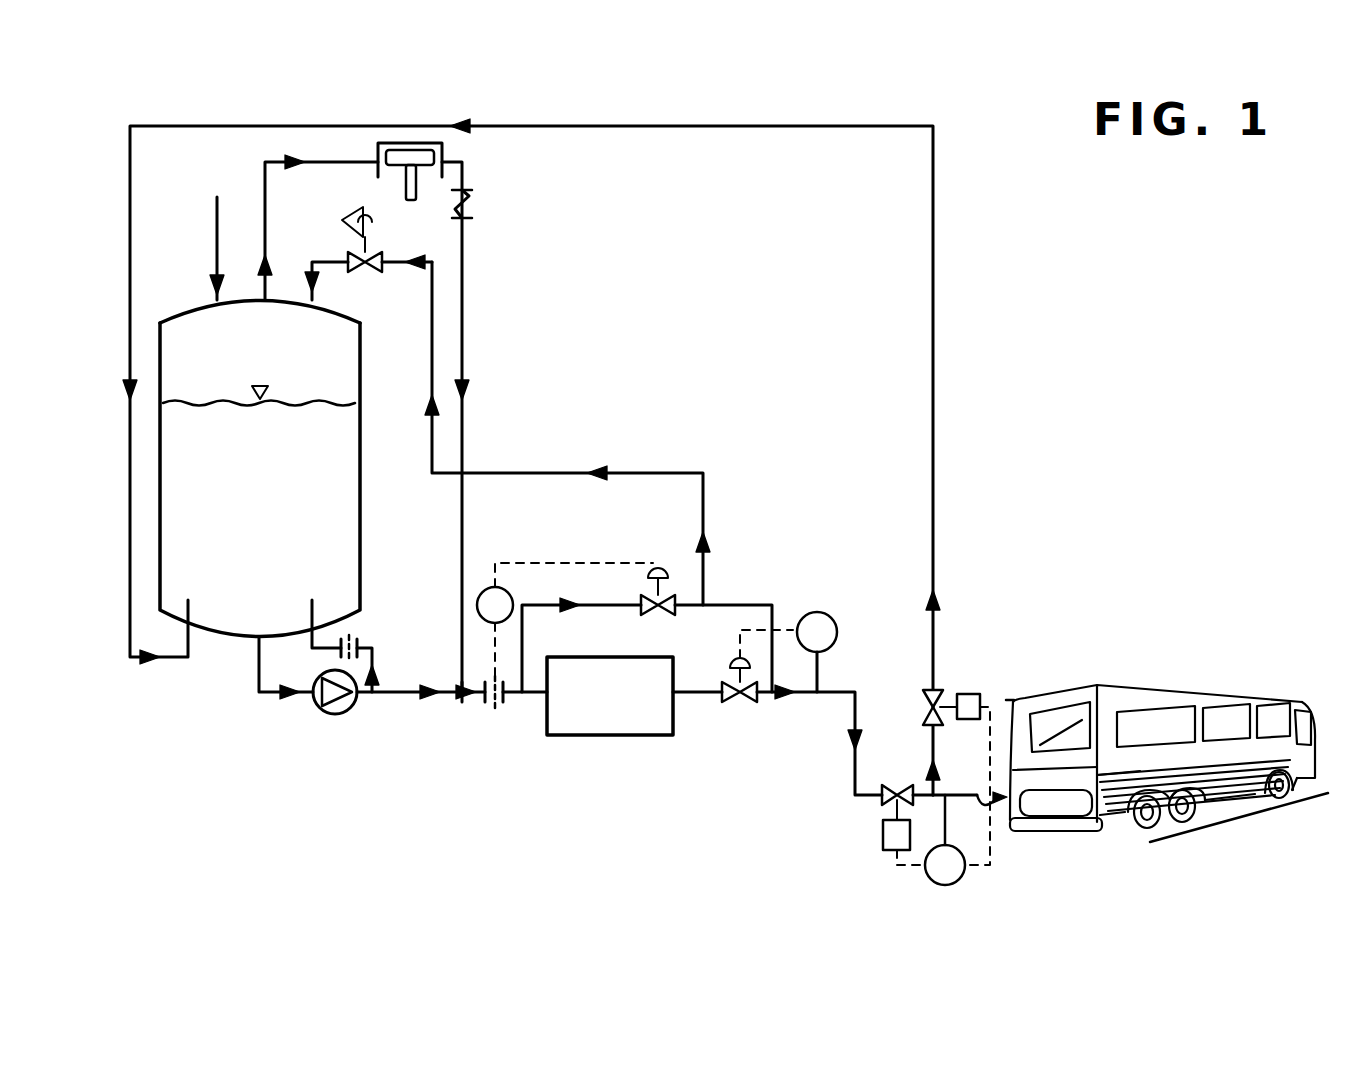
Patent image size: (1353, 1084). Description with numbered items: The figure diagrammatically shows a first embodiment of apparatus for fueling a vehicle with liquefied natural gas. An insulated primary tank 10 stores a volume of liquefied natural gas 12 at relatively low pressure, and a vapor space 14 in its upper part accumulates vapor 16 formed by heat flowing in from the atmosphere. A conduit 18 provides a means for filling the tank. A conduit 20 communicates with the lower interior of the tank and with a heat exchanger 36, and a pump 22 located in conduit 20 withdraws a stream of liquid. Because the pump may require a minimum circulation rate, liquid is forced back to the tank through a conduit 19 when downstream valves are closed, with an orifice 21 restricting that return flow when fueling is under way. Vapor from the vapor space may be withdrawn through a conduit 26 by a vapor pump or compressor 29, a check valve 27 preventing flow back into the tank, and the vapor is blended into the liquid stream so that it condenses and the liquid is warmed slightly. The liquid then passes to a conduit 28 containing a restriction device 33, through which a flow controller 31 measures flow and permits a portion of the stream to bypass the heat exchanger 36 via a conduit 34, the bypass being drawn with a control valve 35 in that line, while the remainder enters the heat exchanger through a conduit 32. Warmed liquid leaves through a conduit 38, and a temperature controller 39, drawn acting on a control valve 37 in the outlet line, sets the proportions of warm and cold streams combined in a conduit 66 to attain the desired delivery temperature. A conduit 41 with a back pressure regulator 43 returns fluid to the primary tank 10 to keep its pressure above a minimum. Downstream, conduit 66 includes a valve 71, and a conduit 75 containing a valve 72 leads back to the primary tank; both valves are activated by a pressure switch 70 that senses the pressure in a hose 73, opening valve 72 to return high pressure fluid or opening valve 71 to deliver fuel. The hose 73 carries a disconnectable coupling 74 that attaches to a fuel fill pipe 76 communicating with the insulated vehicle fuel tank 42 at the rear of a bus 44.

The primary tank 10 is at (365, 491).
The liquefied natural gas 12 is at (236, 524).
The vapor space 14 is at (190, 320).
The vapor 16 is at (244, 346).
The conduit 18 is at (215, 243).
The conduit 19 is at (370, 648).
The conduit 20 is at (257, 680).
The orifice 21 is at (352, 632).
The pump 22 is at (331, 714).
The conduit 26 is at (378, 157).
The check valve 27 is at (502, 204).
The conduit 28 is at (462, 706).
The vapor pump or compressor 29 is at (427, 141).
The flow controller 31 is at (494, 586).
The conduit 32 is at (533, 698).
The restriction device 33 is at (485, 675).
The conduit 34 is at (536, 597).
The bypass control valve 35 is at (676, 595).
The heat exchanger 36 is at (645, 739).
The temperature control valve 37 is at (744, 703).
The conduit 38 is at (689, 688).
The temperature controller 39 is at (825, 613).
The conduit 41 is at (525, 470).
The vehicle fuel tank 42 is at (1170, 826).
The back pressure regulator 43 is at (385, 256).
The bus 44 is at (1175, 687).
The conduit 66 is at (837, 698).
The pressure switch 70 is at (941, 886).
The valve 71 is at (884, 806).
The valve 72 is at (941, 691).
The hose 73 is at (978, 812).
The coupling 74 is at (1013, 700).
The conduit 75 is at (938, 627).
The fuel fill pipe 76 is at (1095, 775).